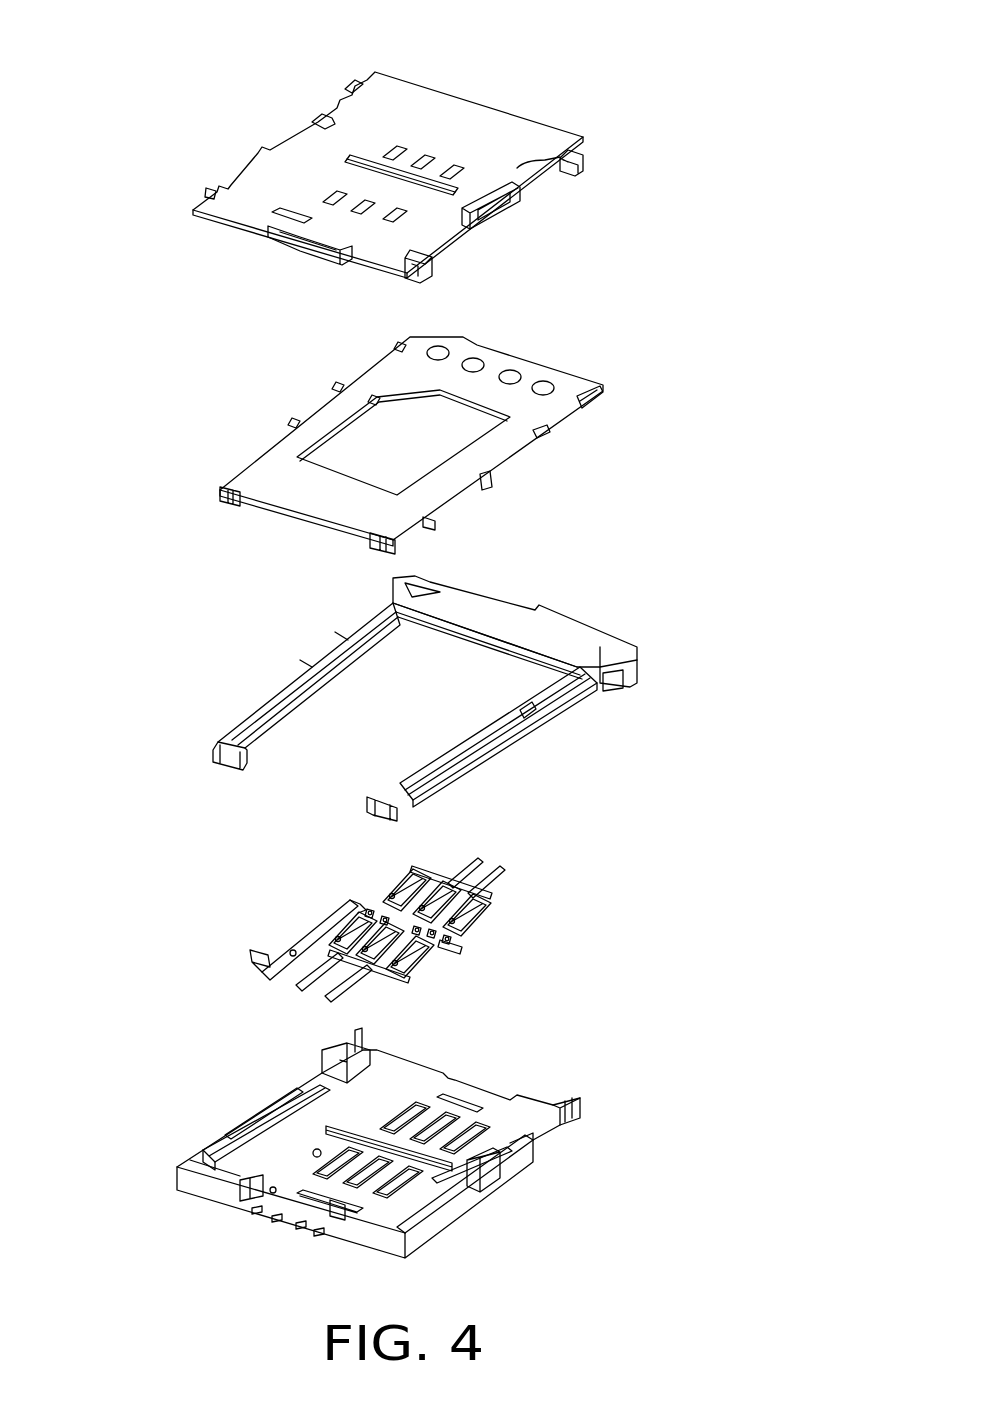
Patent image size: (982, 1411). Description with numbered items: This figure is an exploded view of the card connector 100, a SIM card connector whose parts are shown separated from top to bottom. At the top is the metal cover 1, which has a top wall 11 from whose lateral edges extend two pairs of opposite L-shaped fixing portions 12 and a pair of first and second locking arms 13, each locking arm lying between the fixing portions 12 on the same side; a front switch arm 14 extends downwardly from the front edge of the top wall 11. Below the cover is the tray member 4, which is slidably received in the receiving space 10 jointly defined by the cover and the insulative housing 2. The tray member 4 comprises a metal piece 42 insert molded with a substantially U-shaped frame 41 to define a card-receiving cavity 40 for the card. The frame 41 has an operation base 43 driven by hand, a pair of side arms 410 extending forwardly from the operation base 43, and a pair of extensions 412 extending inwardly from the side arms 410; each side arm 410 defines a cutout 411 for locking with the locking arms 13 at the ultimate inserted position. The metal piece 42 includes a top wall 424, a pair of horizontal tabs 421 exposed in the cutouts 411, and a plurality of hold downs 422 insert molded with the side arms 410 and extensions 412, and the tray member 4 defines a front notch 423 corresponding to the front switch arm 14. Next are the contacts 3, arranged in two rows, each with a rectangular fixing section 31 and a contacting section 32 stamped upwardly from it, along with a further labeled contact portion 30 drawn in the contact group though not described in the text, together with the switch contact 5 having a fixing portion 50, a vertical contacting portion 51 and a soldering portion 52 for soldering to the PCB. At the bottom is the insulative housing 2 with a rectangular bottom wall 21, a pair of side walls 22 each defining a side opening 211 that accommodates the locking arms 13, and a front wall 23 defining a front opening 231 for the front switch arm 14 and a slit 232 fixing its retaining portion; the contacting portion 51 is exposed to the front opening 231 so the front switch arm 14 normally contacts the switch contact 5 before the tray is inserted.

The card connector 100 is at (168, 1212).
The metal cover 1 is at (266, 113).
The top wall 11 is at (471, 123).
The L-shaped fixing portions 12 is at (358, 83).
The first and second locking arms 13 is at (322, 118).
The front switch arm 14 is at (306, 249).
The insulative housing 2 is at (236, 1087).
The receiving space 10 is at (387, 1073).
The bottom wall 21 is at (523, 1107).
The side opening 211 is at (543, 1157).
The side walls 22 is at (333, 1053).
The front wall 23 is at (220, 1196).
The front opening 231 is at (273, 1210).
The slit 232 is at (340, 1215).
The contacts 3 is at (437, 877).
The retaining portion of contact 30 is at (457, 910).
The rectangular fixing section 31 is at (497, 907).
The contacting section 32 is at (493, 868).
The tray member 4 is at (673, 322).
The frame 41 is at (232, 693).
The card-receiving cavity 40 is at (463, 687).
The side arms 410 is at (315, 668).
The cutout 411 is at (337, 645).
The extensions 412 is at (247, 742).
The operation base 43 is at (507, 610).
The metal piece 42 is at (256, 417).
The horizontal tabs 421 is at (340, 387).
The hold downs 422 is at (233, 503).
The front notch 423 is at (298, 511).
The top wall 424 is at (562, 392).
The switch contact 5 is at (263, 862).
The fixing portion 50 is at (310, 937).
The vertical contacting portion 51 is at (252, 955).
The soldering portion 52 is at (357, 908).